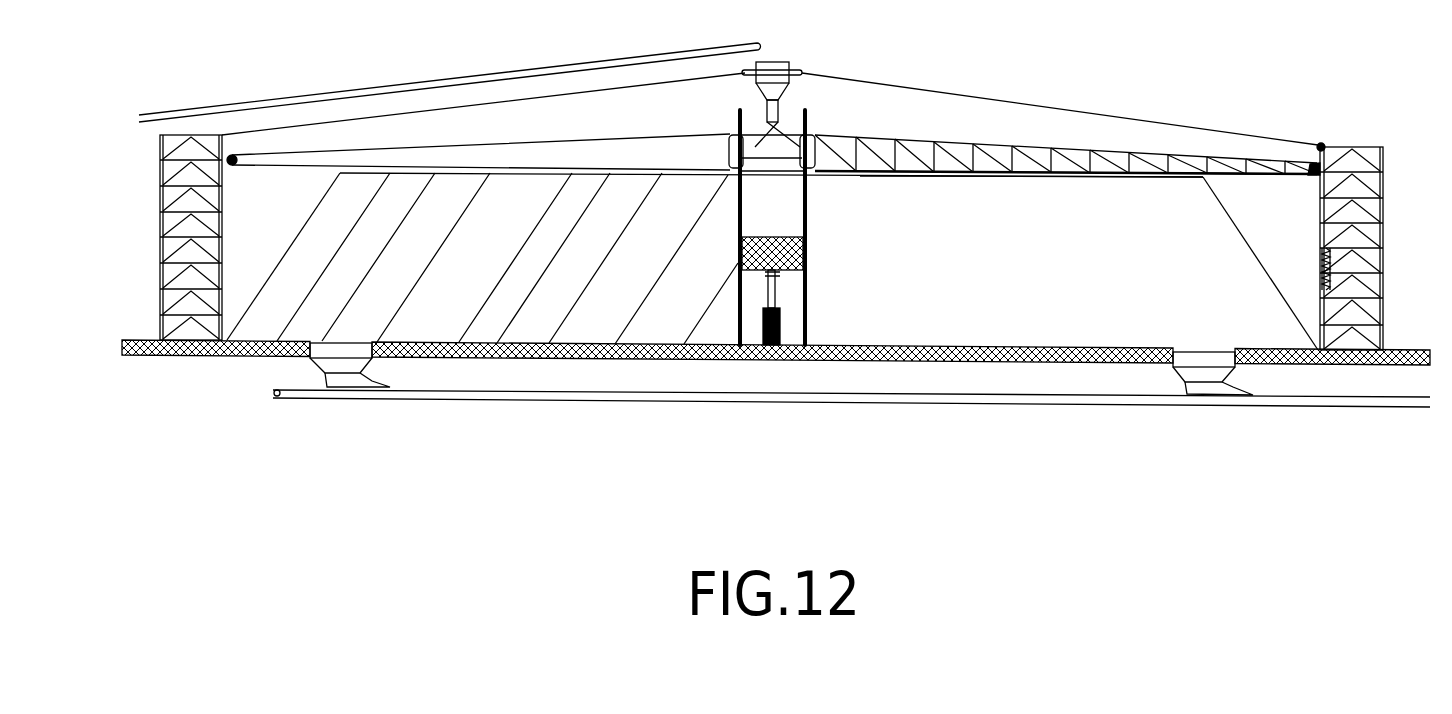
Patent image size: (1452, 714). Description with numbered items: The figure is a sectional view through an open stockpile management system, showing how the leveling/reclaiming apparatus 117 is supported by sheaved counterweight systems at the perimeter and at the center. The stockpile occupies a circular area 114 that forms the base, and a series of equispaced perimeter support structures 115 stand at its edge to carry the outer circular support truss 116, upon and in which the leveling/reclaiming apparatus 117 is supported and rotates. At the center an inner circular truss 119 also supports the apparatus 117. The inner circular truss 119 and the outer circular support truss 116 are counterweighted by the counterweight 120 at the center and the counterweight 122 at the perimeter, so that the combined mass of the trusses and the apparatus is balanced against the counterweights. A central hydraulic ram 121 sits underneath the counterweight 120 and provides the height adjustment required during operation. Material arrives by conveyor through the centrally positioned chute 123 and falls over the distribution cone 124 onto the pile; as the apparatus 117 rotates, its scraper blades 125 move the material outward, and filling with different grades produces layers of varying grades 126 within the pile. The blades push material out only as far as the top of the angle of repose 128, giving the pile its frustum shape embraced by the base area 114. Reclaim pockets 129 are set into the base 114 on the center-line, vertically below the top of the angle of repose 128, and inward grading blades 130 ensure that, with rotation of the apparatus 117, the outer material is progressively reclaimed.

The circular area 114 is at (240, 342).
The perimeter support structures 115 is at (162, 326).
The outer circular support truss 116 is at (1308, 157).
The leveling/reclaiming apparatus 117 is at (988, 143).
The inner circular truss 119 is at (813, 140).
The counterweight 120 is at (803, 257).
The central hydraulic ram 121 is at (780, 330).
The counterweight 122 is at (1330, 283).
The chute 123 is at (773, 62).
The distribution cone 124 is at (757, 147).
The scraper blades 125 is at (1143, 174).
The layers of varying grades 126 is at (442, 250).
The angle of repose 128 is at (1291, 304).
The reclaim pockets 129 is at (310, 354).
The inward grading blades 130 is at (1223, 178).